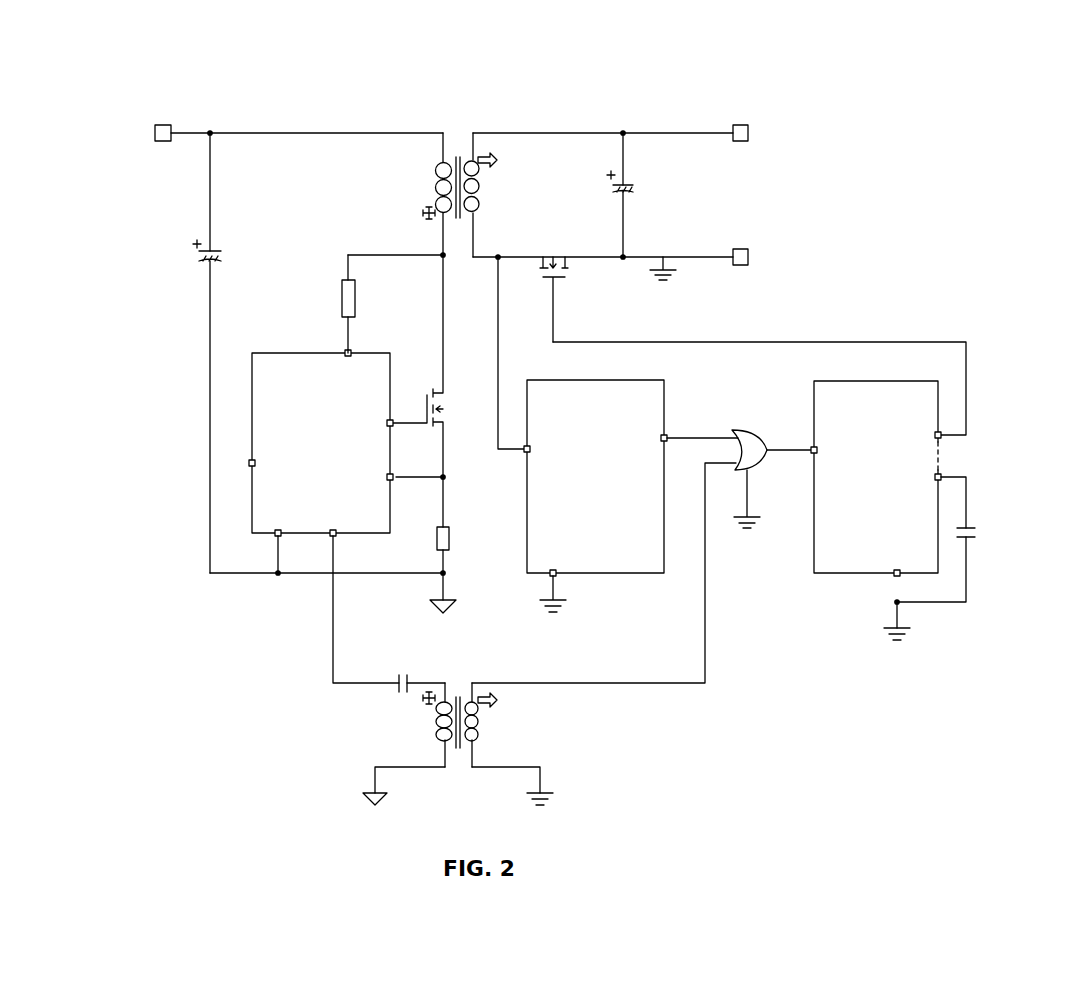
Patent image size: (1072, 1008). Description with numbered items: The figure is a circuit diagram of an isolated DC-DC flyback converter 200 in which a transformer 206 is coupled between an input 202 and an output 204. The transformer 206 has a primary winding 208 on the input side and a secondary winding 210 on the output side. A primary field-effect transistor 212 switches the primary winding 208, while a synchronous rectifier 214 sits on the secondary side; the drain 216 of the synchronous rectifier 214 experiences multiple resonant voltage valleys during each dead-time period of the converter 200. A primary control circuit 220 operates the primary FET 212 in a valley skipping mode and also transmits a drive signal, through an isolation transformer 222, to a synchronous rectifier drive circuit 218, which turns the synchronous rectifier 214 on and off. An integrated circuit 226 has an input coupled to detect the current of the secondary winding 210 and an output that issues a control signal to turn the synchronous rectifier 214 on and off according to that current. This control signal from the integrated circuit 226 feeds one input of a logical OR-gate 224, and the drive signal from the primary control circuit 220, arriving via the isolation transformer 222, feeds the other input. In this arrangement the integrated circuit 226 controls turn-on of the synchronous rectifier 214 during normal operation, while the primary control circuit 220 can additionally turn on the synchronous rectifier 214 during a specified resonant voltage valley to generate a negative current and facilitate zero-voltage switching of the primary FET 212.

The isolated DC-DC flyback converter 200 is at (770, 92).
The input 202 is at (156, 129).
The output 204 is at (749, 130).
The transformer 206 is at (445, 124).
The primary winding 208 is at (428, 184).
The secondary winding 210 is at (488, 182).
The primary field-effect transistor 212 is at (425, 380).
The synchronous rectifier 214 is at (548, 248).
The drain 216 is at (535, 262).
The synchronous rectifier drive circuit 218 is at (843, 578).
The primary control circuit 220 is at (252, 446).
The isolation transformer 222 is at (432, 724).
The logical OR-gate 224 is at (745, 430).
The integrated circuit 226 is at (664, 410).